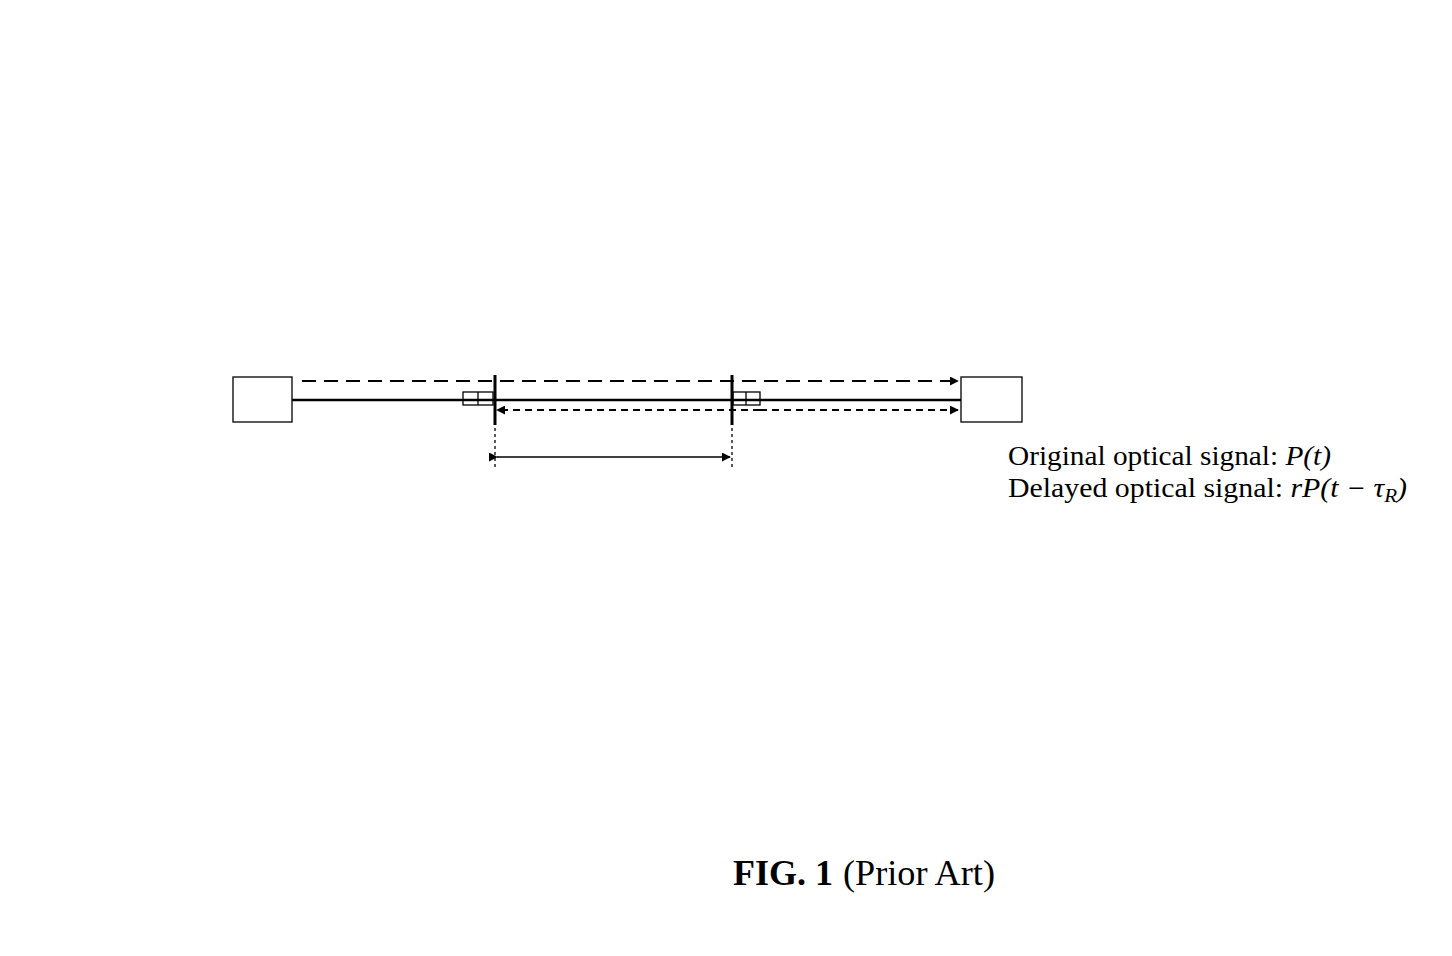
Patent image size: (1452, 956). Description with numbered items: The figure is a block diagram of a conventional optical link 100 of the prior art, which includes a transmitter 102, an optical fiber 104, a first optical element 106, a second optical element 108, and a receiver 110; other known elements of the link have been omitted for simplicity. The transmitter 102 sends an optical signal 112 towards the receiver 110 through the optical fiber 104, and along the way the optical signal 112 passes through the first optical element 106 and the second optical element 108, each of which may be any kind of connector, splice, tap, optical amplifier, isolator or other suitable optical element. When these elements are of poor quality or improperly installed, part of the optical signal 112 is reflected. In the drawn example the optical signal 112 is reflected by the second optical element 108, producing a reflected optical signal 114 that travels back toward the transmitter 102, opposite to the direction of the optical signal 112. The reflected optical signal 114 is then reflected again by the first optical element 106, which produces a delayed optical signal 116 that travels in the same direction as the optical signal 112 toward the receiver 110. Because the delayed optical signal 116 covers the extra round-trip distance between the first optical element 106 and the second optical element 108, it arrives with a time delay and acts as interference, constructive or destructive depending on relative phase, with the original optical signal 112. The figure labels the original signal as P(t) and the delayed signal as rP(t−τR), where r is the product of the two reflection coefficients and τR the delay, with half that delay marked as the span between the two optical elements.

The conventional optical link 100 is at (203, 104).
The transmitter 102 is at (231, 396).
The optical fiber 104 is at (398, 407).
The first optical element 106 is at (460, 390).
The second optical element 108 is at (767, 389).
The receiver 110 is at (1026, 398).
The optical signal 112 is at (670, 376).
The reflected optical signal 114 is at (670, 415).
The delayed optical signal 116 is at (840, 417).